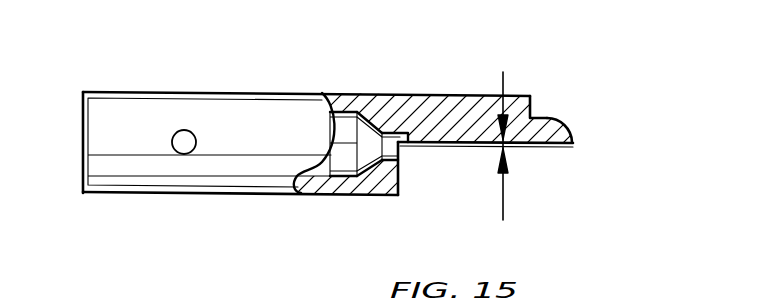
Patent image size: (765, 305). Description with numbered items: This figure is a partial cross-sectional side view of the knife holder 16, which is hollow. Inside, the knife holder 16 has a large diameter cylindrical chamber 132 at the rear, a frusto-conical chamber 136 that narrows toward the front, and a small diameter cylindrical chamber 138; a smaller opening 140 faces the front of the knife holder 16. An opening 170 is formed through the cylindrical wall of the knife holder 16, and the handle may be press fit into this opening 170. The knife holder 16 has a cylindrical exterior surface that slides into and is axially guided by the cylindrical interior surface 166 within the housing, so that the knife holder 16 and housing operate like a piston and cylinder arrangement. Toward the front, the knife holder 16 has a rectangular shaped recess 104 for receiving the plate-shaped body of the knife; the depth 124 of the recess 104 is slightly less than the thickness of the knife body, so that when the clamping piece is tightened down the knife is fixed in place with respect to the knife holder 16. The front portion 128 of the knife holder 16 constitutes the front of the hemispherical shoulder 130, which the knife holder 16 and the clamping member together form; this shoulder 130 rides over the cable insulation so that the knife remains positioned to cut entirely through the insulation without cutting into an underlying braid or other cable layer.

The knife holder 16 is at (112, 247).
The recess 104 is at (547, 147).
The depth 124 is at (505, 181).
The front portion 128 is at (568, 131).
The shoulder 130 is at (562, 120).
The large diameter cylindrical chamber 132 is at (331, 165).
The frusto-conical chamber 136 is at (369, 160).
The small diameter cylindrical chamber 138 is at (389, 144).
The smaller opening 140 is at (401, 150).
The cylindrical interior surface 166 is at (112, 112).
The opening 170 is at (197, 137).